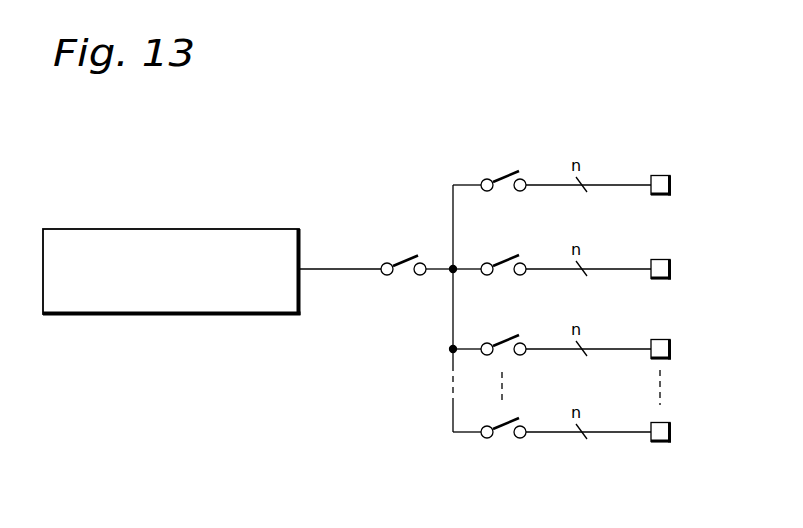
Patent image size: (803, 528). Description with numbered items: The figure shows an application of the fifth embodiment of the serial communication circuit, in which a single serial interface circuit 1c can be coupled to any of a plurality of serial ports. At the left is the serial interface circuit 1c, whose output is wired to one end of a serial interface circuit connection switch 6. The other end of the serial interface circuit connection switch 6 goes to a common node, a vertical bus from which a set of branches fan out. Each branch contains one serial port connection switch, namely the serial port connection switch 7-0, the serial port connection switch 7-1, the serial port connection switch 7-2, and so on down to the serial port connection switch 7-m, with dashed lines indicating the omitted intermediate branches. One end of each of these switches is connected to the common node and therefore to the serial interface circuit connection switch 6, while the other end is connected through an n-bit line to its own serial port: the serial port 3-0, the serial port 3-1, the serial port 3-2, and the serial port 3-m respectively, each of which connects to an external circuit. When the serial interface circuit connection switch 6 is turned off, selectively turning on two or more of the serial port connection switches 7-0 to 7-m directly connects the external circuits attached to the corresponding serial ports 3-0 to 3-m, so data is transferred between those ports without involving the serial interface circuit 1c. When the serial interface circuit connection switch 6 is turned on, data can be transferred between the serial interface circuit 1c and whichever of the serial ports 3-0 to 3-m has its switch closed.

The serial interface circuit 1c is at (238, 228).
The serial interface circuit connection switch 6 is at (405, 258).
The serial port connection switch 7-0 is at (506, 171).
The serial port connection switch 7-1 is at (503, 255).
The serial port connection switch 7-2 is at (505, 336).
The serial port connection switch 7-m is at (502, 438).
The serial port 3-0 is at (658, 175).
The serial port 3-1 is at (661, 259).
The serial port 3-2 is at (668, 339).
The serial port 3-m is at (667, 422).